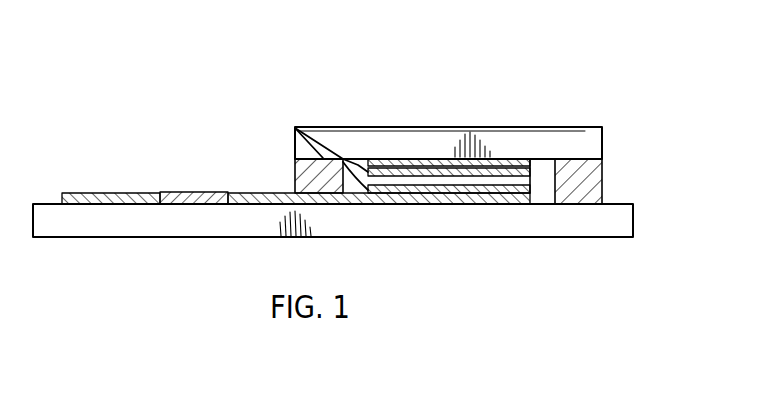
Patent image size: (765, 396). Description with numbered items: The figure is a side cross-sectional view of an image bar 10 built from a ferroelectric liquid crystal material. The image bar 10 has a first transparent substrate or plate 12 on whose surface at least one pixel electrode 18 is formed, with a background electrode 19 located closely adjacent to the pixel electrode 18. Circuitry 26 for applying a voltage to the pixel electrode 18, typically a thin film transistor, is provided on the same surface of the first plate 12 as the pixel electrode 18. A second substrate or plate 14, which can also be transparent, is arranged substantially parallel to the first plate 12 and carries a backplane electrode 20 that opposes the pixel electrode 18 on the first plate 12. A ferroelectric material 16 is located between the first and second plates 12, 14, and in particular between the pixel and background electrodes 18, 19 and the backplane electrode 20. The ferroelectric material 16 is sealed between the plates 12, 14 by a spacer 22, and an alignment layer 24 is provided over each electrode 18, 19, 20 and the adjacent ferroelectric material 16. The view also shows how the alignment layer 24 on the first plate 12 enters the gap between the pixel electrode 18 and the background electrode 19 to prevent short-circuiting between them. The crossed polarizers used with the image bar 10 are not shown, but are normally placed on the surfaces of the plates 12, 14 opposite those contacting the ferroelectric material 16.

The image bar 10 is at (500, 68).
The first transparent substrate 12 is at (222, 238).
The second substrate 14 is at (428, 127).
The ferroelectric material 16 is at (542, 190).
The pixel electrode 18 is at (428, 204).
The background electrode 19 is at (490, 204).
The backplane electrode 20 is at (517, 159).
The spacer 22 is at (604, 158).
The alignment layer 24 is at (295, 128).
The circuitry 26 is at (161, 193).